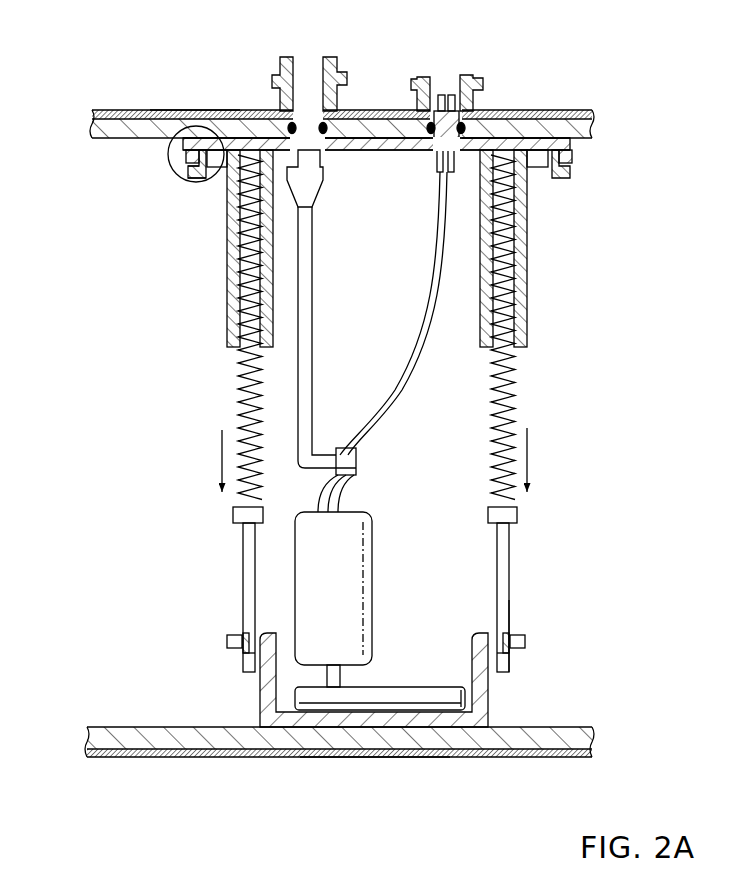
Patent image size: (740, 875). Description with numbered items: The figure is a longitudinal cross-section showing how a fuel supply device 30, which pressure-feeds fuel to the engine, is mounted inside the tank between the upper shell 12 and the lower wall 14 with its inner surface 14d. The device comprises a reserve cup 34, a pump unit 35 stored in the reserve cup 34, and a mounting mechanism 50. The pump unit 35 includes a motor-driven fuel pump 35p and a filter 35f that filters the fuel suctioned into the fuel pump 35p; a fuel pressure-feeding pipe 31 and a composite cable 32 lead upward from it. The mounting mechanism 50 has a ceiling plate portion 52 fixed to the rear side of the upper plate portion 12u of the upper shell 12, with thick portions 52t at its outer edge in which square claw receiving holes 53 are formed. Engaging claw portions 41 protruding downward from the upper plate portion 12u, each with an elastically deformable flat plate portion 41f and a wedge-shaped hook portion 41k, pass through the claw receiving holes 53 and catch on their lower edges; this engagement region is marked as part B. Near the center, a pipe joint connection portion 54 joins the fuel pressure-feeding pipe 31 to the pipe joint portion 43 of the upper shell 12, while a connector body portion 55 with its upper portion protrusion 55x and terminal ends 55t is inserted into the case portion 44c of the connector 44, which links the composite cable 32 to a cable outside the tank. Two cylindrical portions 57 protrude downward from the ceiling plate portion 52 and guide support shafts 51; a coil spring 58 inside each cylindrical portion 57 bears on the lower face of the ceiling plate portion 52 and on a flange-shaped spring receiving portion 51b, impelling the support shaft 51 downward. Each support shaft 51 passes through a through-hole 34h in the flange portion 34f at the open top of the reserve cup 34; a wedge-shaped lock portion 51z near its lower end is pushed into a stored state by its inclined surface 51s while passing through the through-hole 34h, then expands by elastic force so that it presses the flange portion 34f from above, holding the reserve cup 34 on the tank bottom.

The upper shell 12 is at (150, 108).
The upper plate portion 12u is at (185, 109).
The lower wall of fuel tank 14 is at (339, 789).
The lower wall inner surface 14d is at (376, 760).
The fuel supply device 30 is at (122, 325).
The fuel pressure-feeding pipe 31 is at (313, 292).
The composite cable 32 is at (412, 380).
The reserve cup 34 is at (384, 672).
The flange portion 34f is at (230, 641).
The through-hole 34h is at (240, 655).
The pump unit 35 is at (380, 592).
The fuel pump 35p is at (370, 578).
The filter 35f is at (410, 696).
The engaging claw portion 41 is at (346, 204).
The flat plate portion 41f is at (182, 158).
The hook portion 41k is at (184, 168).
The pipe joint portion 43 is at (280, 100).
The connector 44 is at (467, 55).
The case portion 44c is at (476, 100).
The mounting mechanism 50 is at (212, 322).
The support shaft 51 is at (386, 524).
The spring receiving portion 51b is at (234, 513).
The lock portion 51z is at (244, 630).
The inclined surface 51s is at (516, 633).
The ceiling plate portion 52 is at (351, 181).
The thick portion 52t is at (183, 147).
The claw receiving hole 53 is at (213, 170).
The pipe joint connection portion 54 is at (323, 168).
The connector body portion 55 is at (468, 133).
The upper portion protrusion 55x is at (446, 93).
The grommet terminal end 55t is at (440, 153).
The cylindrical portion 57 is at (227, 290).
The coil spring 58 is at (237, 413).
The B part B is at (178, 182).